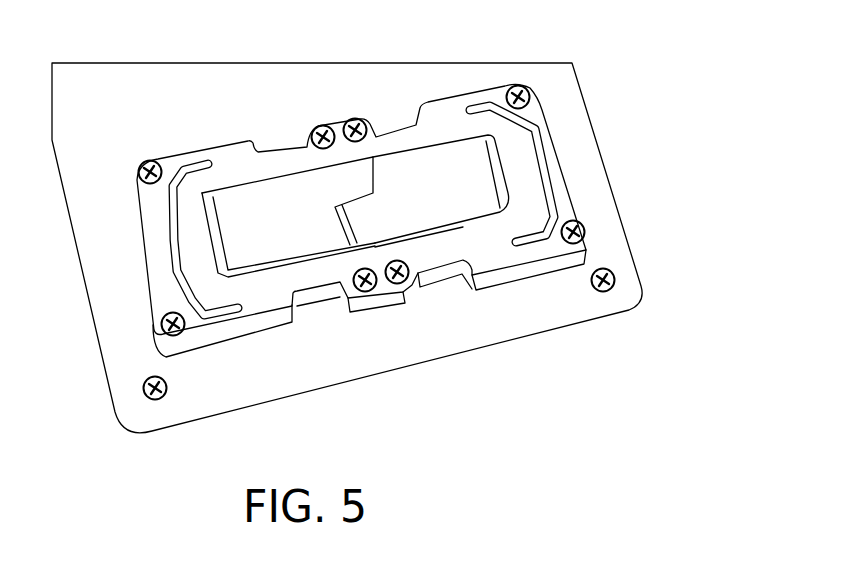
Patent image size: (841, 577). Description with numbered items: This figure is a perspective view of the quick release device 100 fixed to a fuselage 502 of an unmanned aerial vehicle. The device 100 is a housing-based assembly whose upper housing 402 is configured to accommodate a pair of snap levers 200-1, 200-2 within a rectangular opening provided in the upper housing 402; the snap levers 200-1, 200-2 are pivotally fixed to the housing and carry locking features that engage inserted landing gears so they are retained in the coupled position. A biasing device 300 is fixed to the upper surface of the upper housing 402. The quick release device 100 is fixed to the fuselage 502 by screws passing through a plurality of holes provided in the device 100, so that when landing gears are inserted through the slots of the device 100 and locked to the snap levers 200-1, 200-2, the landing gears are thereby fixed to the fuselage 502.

The quick release device 100 is at (416, 182).
The snap lever 200-1 is at (301, 197).
The snap lever 200-2 is at (422, 180).
The biasing device 300 is at (558, 195).
The upper housing 402 is at (578, 257).
The fuselage 502 is at (617, 297).